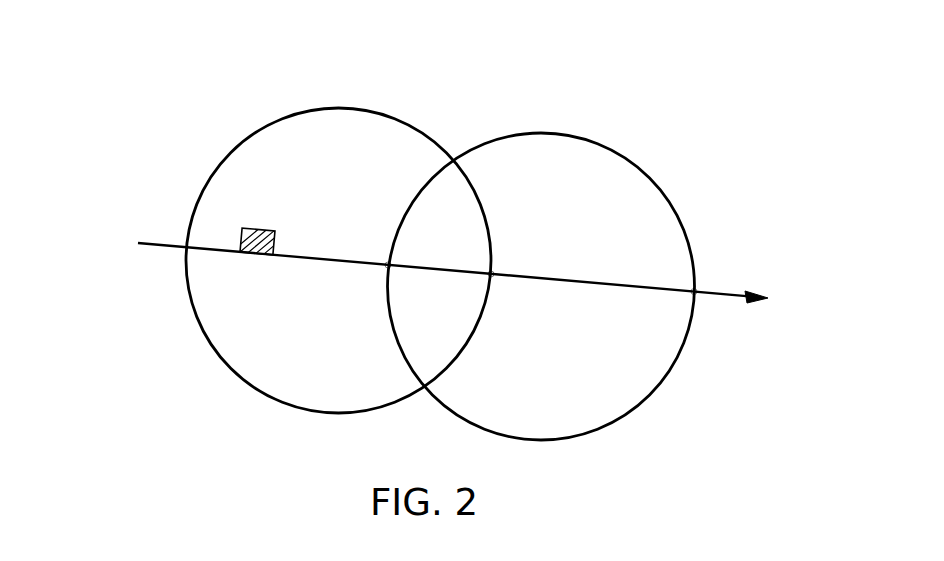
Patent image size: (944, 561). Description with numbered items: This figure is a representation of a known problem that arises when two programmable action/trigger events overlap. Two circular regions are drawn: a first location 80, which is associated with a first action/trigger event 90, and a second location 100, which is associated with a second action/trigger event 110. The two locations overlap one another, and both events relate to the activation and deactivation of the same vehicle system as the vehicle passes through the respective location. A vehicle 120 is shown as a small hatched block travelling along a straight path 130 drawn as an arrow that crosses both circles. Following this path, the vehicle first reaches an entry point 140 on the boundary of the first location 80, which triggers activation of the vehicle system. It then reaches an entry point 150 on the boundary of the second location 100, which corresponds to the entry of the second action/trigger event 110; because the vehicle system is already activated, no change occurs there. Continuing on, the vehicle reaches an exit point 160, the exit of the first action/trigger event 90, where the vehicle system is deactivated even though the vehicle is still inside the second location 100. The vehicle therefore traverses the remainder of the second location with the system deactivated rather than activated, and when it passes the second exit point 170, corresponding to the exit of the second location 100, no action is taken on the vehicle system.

The first location 80 is at (339, 108).
The first action/trigger event 90 is at (163, 158).
The second location 100 is at (541, 133).
The second action/trigger event 110 is at (722, 123).
The vehicle 120 is at (257, 228).
The path 130 is at (724, 291).
The entry point 140 is at (185, 248).
The entry point 150 is at (388, 265).
The exit point 160 is at (491, 274).
The second exit point 170 is at (694, 292).